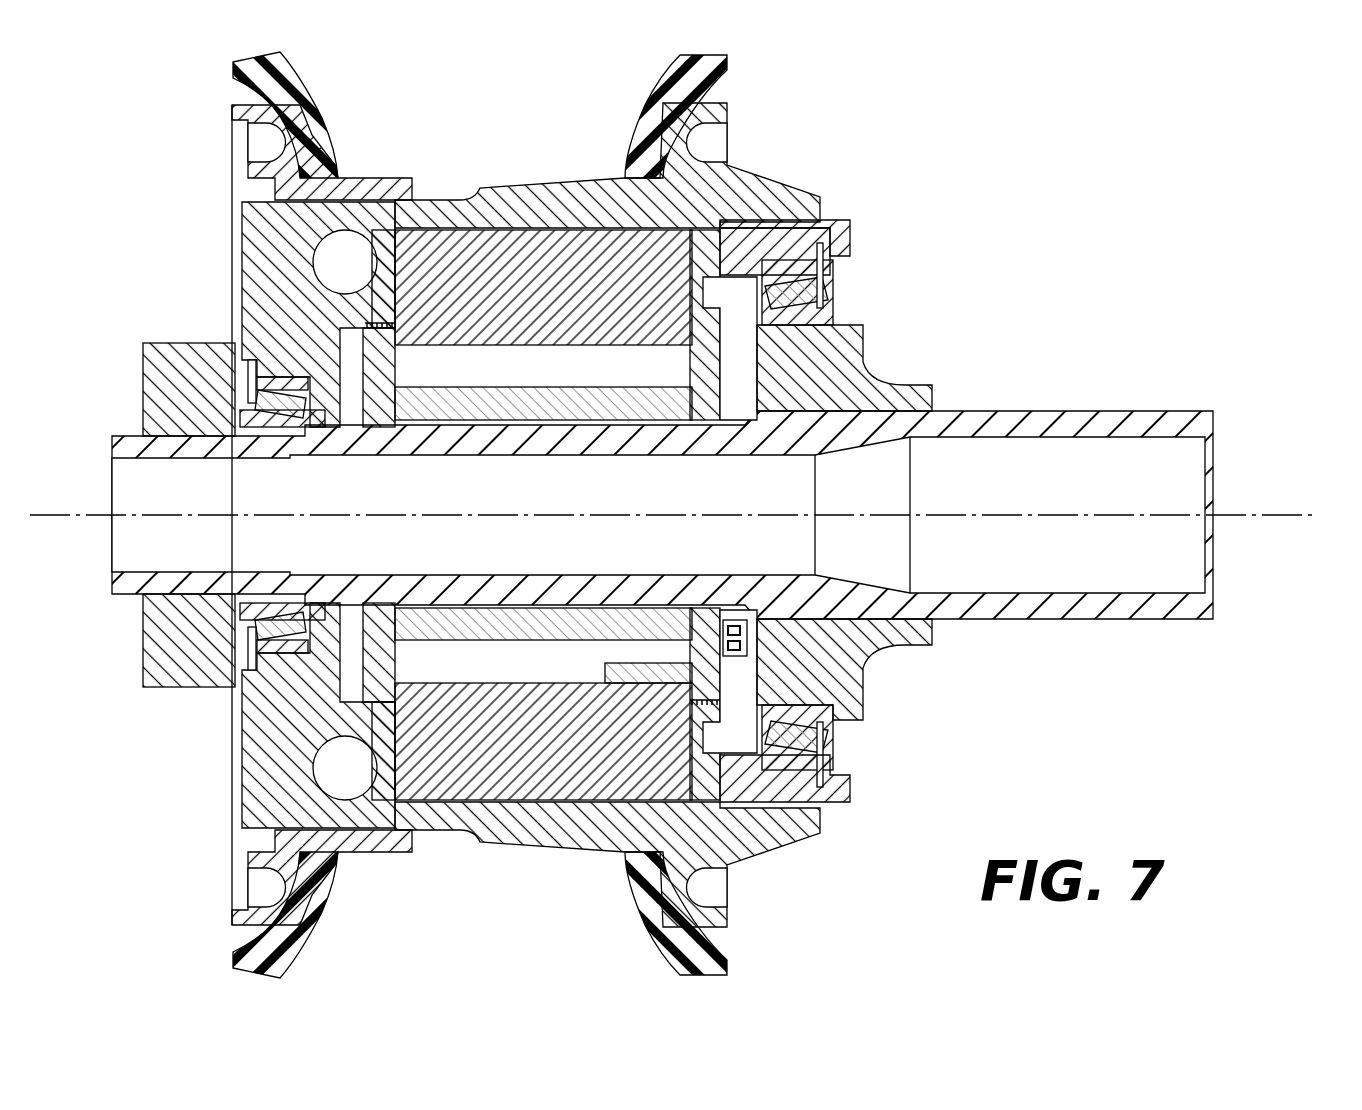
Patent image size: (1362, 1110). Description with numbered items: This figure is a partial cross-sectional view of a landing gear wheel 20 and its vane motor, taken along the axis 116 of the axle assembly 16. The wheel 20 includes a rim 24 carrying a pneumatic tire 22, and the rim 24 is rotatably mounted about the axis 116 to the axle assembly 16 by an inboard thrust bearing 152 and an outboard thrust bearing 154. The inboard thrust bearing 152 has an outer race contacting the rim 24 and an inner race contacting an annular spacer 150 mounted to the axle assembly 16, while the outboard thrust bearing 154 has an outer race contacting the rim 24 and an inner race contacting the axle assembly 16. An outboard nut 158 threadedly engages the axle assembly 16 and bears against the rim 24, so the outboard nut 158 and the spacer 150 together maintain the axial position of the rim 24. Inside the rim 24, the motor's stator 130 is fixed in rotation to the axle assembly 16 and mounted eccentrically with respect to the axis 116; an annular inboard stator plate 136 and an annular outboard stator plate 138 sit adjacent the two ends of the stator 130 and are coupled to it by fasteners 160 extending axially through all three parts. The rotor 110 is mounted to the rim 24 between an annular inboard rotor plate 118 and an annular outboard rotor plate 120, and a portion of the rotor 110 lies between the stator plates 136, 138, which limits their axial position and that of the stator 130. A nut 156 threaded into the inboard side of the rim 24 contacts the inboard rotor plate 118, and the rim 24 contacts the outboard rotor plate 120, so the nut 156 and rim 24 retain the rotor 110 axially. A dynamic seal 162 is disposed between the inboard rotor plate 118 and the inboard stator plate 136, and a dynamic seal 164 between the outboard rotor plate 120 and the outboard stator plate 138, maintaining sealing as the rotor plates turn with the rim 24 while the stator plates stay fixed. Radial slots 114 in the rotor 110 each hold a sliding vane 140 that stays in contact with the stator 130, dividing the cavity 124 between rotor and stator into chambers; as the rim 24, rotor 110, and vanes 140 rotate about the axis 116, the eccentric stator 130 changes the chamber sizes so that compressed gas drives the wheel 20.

The axle assembly 16 is at (1068, 410).
The wheel 20 is at (728, 65).
The pneumatic tire 22 is at (235, 80).
The rim 24 is at (410, 182).
The rotor 110 is at (448, 236).
The radial slot 114 is at (543, 803).
The axis 116 is at (1285, 512).
The inboard rotor plate 118 is at (852, 787).
The outboard rotor plate 120 is at (386, 245).
The cavity 124 is at (505, 355).
The stator 130 is at (556, 400).
The inboard stator plate 136 is at (710, 690).
The outboard stator plate 138 is at (370, 352).
The vane 140 is at (465, 767).
The annular spacer 150 is at (882, 368).
The inboard thrust bearing 152 is at (835, 292).
The outboard thrust bearing 154 is at (300, 385).
The nut 156 is at (845, 222).
The outboard nut 158 is at (160, 345).
The fastener 160 is at (750, 638).
The dynamic seal 162 is at (710, 706).
The dynamic seal 164 is at (375, 320).